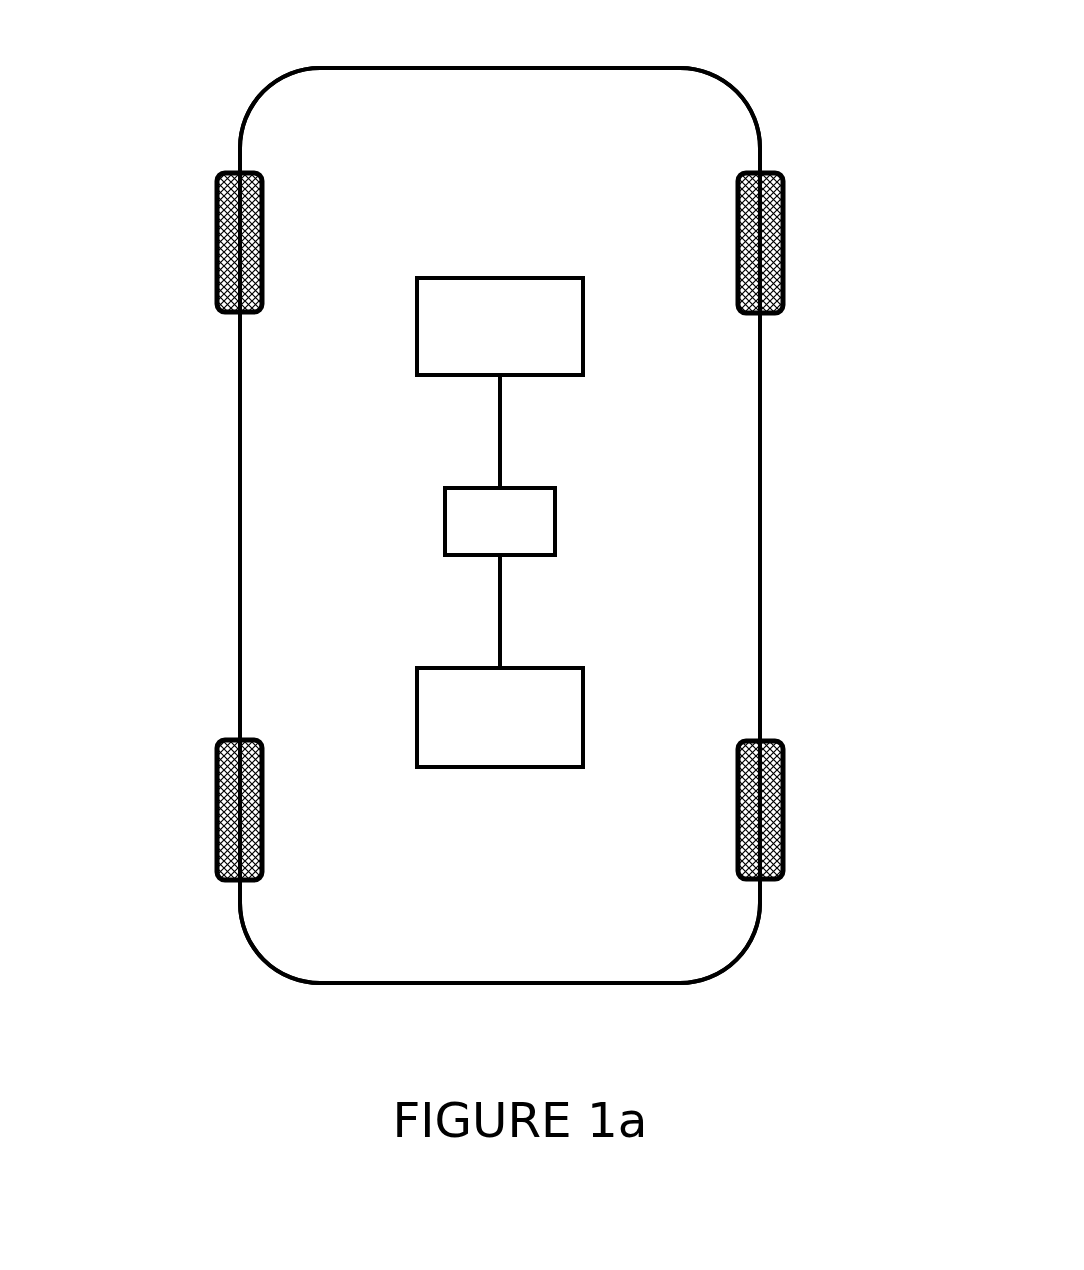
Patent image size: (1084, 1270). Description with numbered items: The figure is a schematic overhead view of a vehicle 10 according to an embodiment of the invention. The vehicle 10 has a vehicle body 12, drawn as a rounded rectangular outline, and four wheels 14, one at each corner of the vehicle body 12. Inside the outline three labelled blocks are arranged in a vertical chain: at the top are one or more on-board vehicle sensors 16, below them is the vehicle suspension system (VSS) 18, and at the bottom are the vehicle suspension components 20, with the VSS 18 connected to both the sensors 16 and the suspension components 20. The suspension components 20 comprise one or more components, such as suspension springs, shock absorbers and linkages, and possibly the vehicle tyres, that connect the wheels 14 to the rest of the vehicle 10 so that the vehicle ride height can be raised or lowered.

The vehicle 10 is at (806, 53).
The vehicle body 12 is at (738, 585).
The wheels 14 is at (218, 242).
The on-board vehicle sensors 16 is at (583, 327).
The vehicle suspension system (VSS) 18 is at (555, 523).
The vehicle suspension components 20 is at (583, 717).